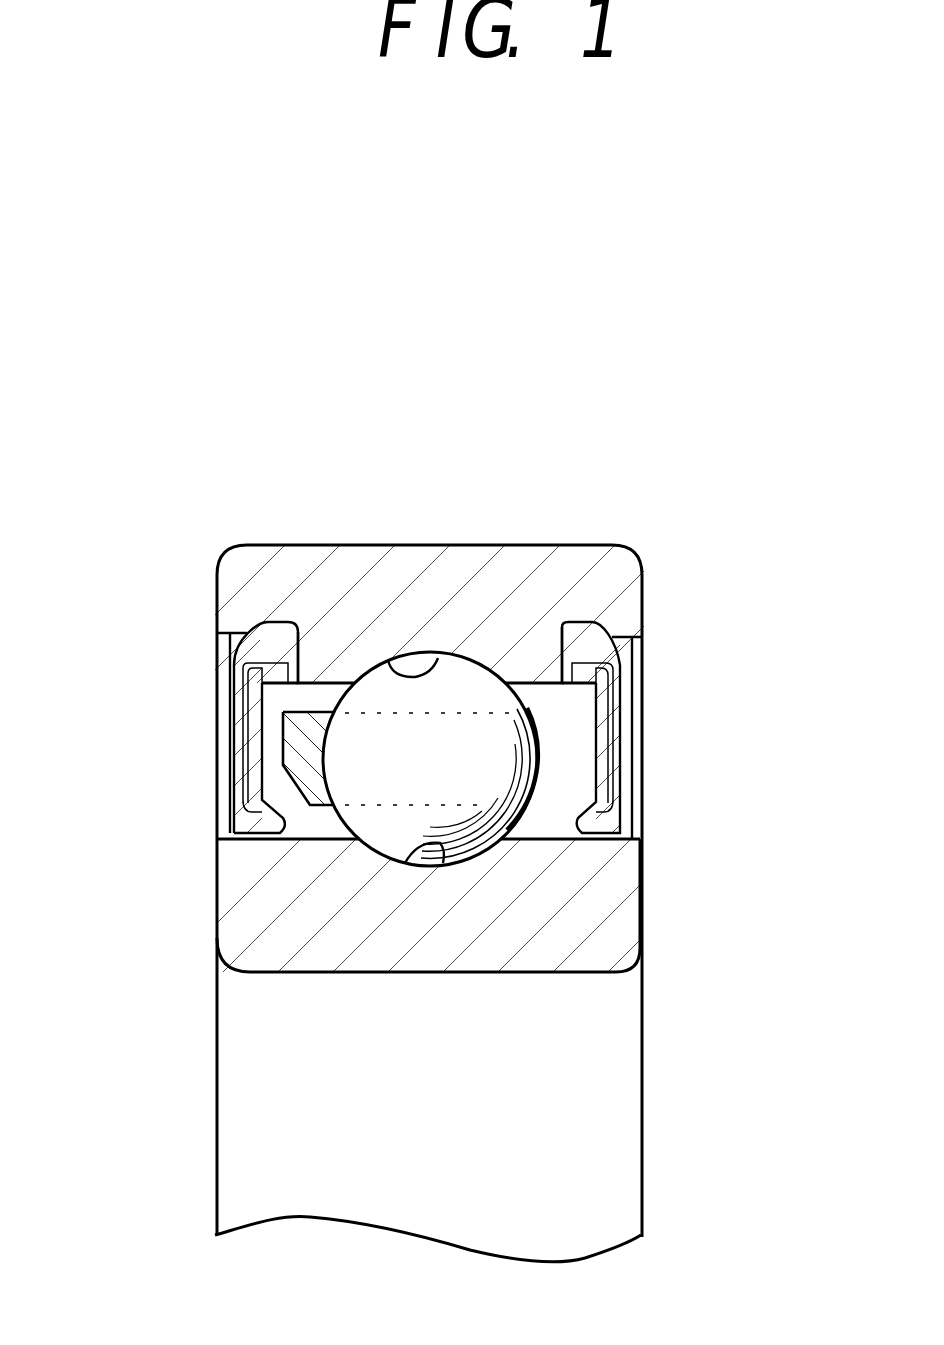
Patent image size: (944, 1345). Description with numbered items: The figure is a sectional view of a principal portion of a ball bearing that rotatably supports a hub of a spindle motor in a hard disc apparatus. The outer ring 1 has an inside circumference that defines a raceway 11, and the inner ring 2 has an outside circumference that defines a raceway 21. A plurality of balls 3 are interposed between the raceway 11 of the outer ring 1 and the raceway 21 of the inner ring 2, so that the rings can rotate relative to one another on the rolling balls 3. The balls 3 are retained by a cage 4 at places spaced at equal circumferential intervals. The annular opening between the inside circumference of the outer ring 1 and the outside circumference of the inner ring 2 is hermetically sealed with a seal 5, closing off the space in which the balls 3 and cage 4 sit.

The outer ring 1 is at (530, 540).
The raceway 11 is at (396, 662).
The inner ring 2 is at (225, 912).
The raceway 21 is at (441, 845).
The balls 3 is at (473, 741).
The cage 4 is at (310, 740).
The seal 5 is at (250, 734).